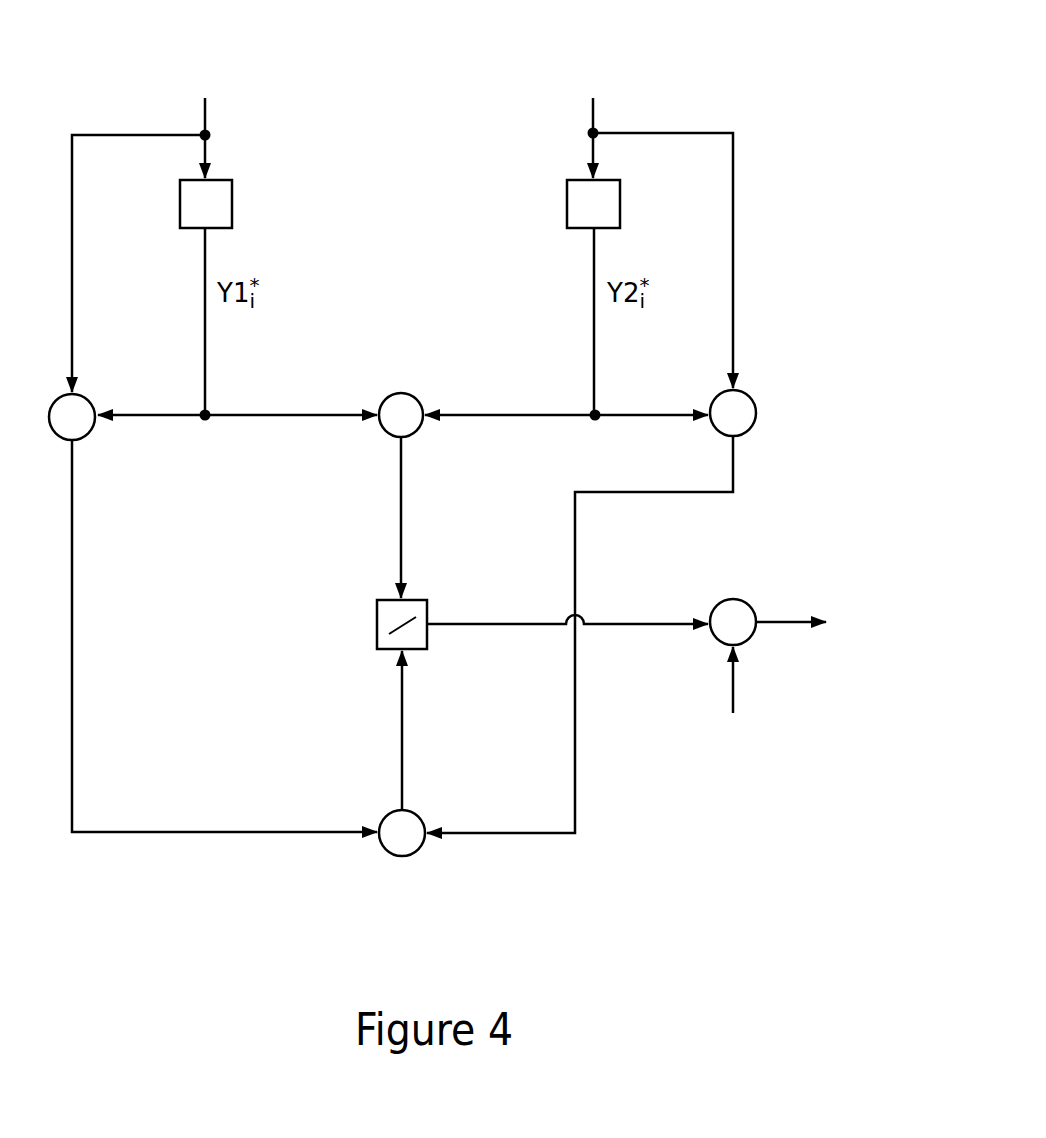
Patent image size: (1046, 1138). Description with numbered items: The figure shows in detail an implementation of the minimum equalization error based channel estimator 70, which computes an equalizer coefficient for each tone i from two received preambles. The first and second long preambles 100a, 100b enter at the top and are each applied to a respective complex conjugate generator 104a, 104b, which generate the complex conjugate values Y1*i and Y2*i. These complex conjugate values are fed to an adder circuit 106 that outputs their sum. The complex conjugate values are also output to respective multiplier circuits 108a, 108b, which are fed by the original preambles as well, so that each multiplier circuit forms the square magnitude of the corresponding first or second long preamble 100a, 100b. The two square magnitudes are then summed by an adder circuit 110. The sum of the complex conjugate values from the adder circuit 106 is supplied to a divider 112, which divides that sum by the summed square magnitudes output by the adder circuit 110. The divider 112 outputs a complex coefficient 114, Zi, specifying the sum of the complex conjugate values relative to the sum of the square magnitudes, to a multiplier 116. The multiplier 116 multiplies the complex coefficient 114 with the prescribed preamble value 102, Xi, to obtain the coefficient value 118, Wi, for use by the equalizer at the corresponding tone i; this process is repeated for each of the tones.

The channel estimator 70 is at (190, 855).
The first long preamble 100a is at (226, 58).
The second long preamble 100b is at (625, 58).
The prescribed preamble value 102 is at (768, 739).
The complex conjugate generator 104a is at (232, 208).
The complex conjugate generator 104b is at (567, 210).
The adder circuit 106 is at (407, 395).
The multiplier circuit 108a is at (83, 399).
The multiplier circuit 108b is at (748, 396).
The adder circuit 110 is at (394, 813).
The divider 112 is at (377, 620).
The complex coefficient 114 is at (490, 578).
The multiplier 116 is at (741, 602).
The coefficient value 118 is at (880, 640).